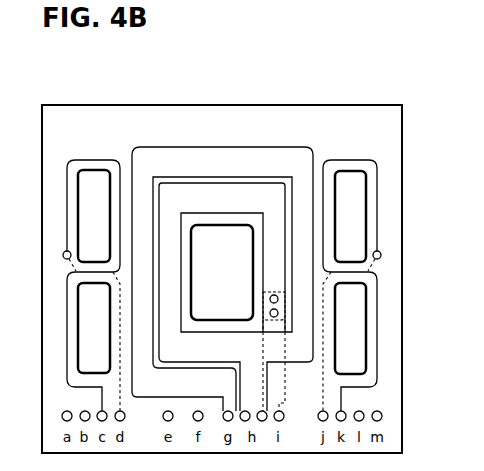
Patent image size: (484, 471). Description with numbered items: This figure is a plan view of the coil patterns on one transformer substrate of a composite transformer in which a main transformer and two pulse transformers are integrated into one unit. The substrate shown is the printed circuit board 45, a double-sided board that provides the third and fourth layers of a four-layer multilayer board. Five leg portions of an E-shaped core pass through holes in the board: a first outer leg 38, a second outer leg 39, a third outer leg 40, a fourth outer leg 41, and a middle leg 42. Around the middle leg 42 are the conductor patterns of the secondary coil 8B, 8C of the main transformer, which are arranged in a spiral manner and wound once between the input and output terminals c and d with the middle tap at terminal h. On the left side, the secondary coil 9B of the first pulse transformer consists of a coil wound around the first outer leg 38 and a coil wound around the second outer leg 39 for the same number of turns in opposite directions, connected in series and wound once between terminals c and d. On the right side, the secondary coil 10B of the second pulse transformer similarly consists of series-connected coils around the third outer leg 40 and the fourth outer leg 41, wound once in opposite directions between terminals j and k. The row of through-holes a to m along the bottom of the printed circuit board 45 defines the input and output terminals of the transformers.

The printed circuit board 45 is at (98, 104).
The secondary coil of the first pulse transformer 9B is at (94, 158).
The secondary coil of the second pulse transformer 10B is at (353, 157).
The secondary coil of the main transformer 8B is at (178, 160).
The secondary coil of the main transformer 8C is at (222, 294).
The first outer leg 38 is at (93, 220).
The second outer leg 39 is at (93, 331).
The third outer leg 40 is at (352, 208).
The fourth outer leg 41 is at (352, 320).
The middle leg 42 is at (229, 235).